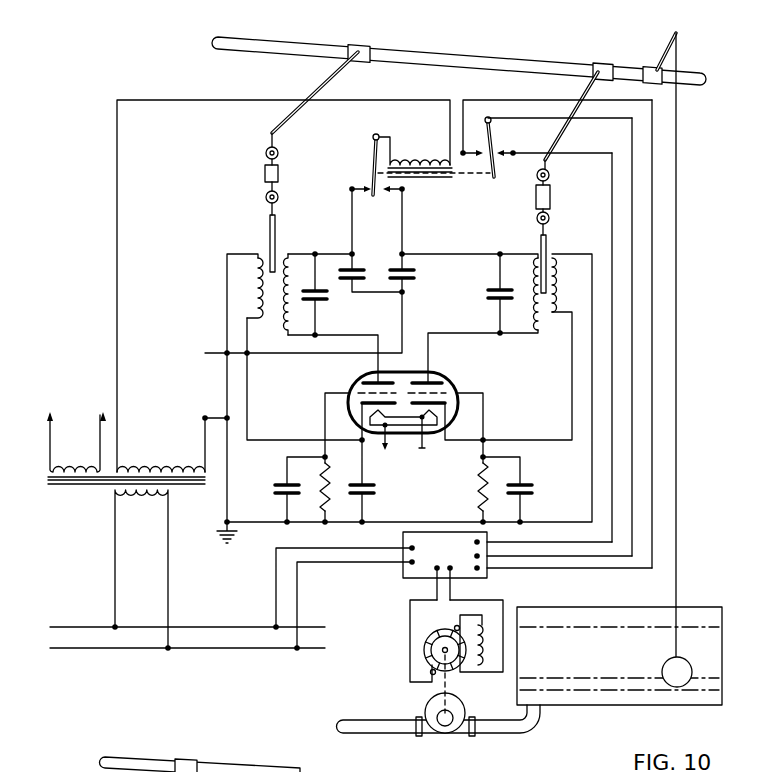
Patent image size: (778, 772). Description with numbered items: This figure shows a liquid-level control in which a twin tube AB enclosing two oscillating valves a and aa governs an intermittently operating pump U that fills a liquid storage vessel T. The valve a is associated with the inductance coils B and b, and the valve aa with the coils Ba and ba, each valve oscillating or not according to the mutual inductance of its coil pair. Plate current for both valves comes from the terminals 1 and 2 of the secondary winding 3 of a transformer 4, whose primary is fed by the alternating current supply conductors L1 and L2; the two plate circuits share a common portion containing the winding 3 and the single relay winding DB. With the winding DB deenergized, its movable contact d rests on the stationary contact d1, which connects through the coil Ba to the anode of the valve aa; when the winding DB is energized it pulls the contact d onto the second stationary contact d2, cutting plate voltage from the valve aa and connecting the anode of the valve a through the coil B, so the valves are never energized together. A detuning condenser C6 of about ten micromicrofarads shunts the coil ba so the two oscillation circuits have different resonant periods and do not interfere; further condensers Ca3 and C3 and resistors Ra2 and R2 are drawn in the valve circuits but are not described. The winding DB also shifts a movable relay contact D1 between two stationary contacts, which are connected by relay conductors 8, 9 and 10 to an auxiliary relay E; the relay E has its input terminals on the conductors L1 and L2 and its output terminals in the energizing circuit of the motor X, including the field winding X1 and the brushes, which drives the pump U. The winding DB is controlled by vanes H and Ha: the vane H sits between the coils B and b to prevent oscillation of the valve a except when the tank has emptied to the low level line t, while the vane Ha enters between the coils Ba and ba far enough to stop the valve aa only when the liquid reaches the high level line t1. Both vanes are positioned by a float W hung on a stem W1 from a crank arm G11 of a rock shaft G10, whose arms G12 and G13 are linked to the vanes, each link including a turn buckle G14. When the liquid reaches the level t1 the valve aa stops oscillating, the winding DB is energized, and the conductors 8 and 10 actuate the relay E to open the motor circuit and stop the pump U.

The rock shaft G10 is at (383, 47).
The crank arm G11 is at (663, 47).
The arm G12 is at (575, 94).
The arm G13 is at (318, 87).
The turn buckle G14 is at (562, 194).
The relay winding DB is at (413, 153).
The movable relay contact d is at (372, 157).
The stationary relay contact d1 is at (350, 190).
The stationary relay contact d2 is at (403, 191).
The movable relay contact D1 is at (495, 178).
The vane Ha is at (268, 230).
The vane H is at (548, 246).
The inductance coil Ba is at (289, 256).
The inductance coil ba is at (257, 294).
The inductance coil B is at (540, 326).
The inductance coil b is at (562, 296).
The twin tube AB is at (436, 373).
The oscillating valve aa is at (354, 386).
The oscillating valve a is at (450, 386).
The condenser Ca3 is at (284, 484).
The detuning condenser C6 is at (367, 486).
The condenser C3 is at (530, 488).
The resistor Ra2 is at (325, 514).
The resistor R2 is at (478, 486).
The auxiliary relay E is at (445, 555).
The motor X is at (440, 628).
The field winding X1 is at (478, 667).
The pump U is at (428, 702).
The liquid storage vessel T is at (640, 708).
The low level line t is at (607, 688).
The high level line t1 is at (590, 628).
The float W is at (705, 650).
The link or stem W1 is at (677, 492).
The alternating current supply conductor L1 is at (84, 627).
The alternating current supply conductor L2 is at (100, 648).
The terminal 1 is at (206, 417).
The terminal 2 is at (118, 318).
The secondary winding 3 is at (148, 460).
The transformer 4 is at (48, 481).
The relay conductor 8 is at (633, 262).
The relay conductor 9 is at (613, 240).
The relay conductor 10 is at (653, 213).